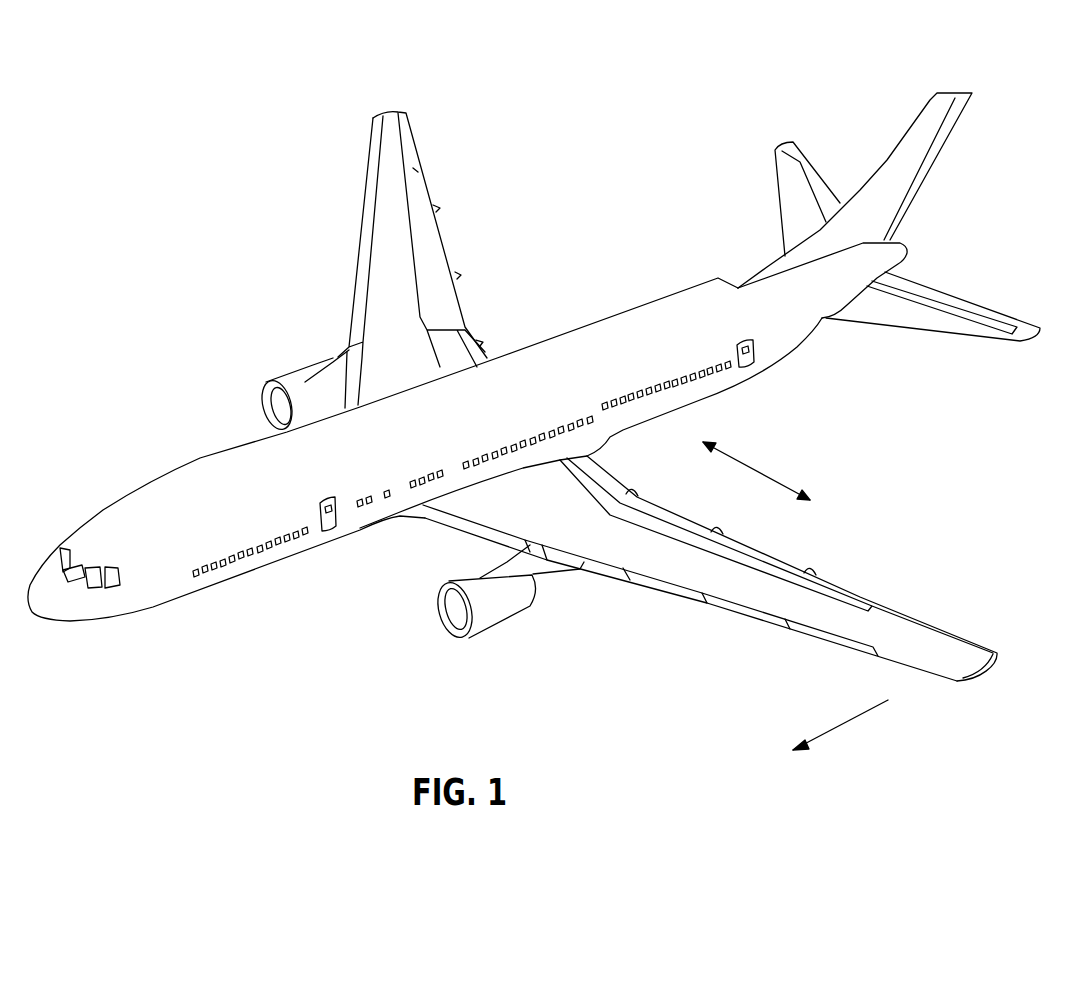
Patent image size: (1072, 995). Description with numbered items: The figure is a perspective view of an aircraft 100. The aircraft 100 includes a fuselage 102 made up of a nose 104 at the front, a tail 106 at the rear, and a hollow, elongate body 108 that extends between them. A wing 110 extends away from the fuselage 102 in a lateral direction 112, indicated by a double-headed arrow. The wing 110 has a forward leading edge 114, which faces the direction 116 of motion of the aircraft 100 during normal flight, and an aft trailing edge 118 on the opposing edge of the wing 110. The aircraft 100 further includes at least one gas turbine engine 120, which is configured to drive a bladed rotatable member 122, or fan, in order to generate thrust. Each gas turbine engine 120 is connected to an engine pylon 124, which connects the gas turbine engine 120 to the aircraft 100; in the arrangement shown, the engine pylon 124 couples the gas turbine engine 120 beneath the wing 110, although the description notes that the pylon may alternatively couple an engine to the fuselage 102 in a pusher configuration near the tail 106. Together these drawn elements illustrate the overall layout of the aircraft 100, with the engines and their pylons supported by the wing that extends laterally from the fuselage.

The aircraft 100 is at (240, 268).
The fuselage 102 is at (573, 353).
The nose 104 is at (110, 527).
The tail 106 is at (810, 343).
The hollow, elongate body 108 is at (365, 467).
The wing 110 is at (703, 577).
The lateral direction 112 is at (755, 468).
The forward leading edge 114 is at (873, 652).
The direction of motion 116 is at (855, 720).
The aft trailing edge 118 is at (913, 617).
The gas turbine engine 120 is at (292, 380).
The bladed rotatable member 122 is at (457, 610).
The engine pylon 124 is at (507, 562).